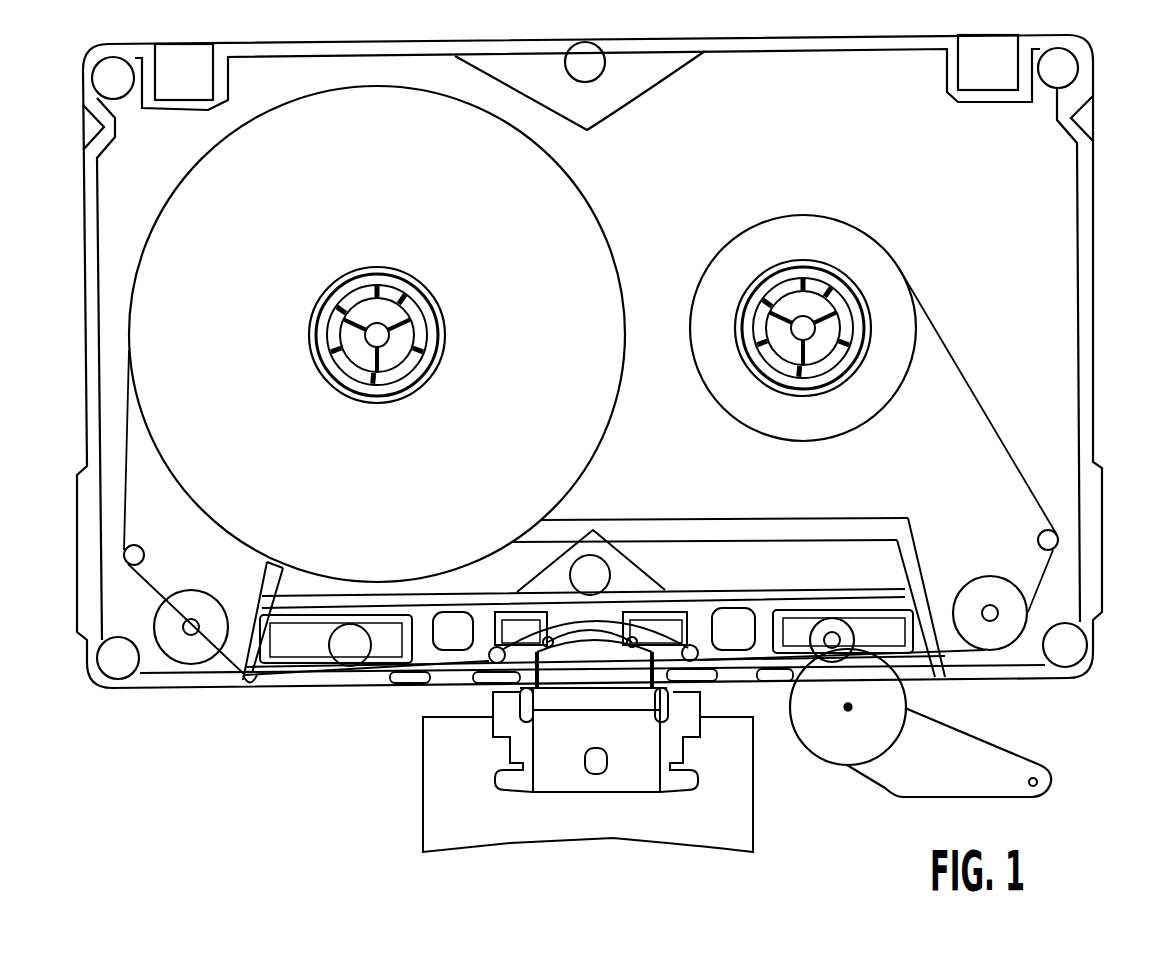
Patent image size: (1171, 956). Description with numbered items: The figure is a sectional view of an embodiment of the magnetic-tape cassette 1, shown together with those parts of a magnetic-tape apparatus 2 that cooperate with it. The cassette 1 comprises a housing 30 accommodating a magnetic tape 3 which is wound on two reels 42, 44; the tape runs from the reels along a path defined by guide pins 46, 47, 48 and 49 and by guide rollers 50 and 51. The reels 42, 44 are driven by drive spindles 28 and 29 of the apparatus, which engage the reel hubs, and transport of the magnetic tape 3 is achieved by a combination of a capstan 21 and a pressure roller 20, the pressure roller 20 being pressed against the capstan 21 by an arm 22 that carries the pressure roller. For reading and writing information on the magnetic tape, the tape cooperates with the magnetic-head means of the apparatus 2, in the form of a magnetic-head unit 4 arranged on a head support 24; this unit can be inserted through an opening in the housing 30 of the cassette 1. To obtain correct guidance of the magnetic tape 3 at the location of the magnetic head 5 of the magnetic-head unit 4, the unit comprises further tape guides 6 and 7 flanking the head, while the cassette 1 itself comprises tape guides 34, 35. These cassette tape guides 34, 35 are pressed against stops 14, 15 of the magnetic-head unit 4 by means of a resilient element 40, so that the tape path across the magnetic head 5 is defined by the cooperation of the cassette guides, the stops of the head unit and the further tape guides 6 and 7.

The magnetic-tape cassette 1 is at (1097, 215).
The magnetic-tape apparatus 2 is at (972, 724).
The magnetic tape 3 is at (963, 354).
The magnetic-head unit 4 is at (588, 719).
The magnetic head 5 is at (595, 678).
The tape guide 6 is at (520, 692).
The tape guide 7 is at (670, 687).
The stop 14 is at (549, 654).
The stop 15 is at (633, 654).
The pressure roller 20 is at (835, 745).
The capstan 21 is at (832, 637).
The arm 22 is at (949, 752).
The head support 24 is at (708, 828).
The drive spindle 28 is at (372, 313).
The drive spindle 29 is at (805, 305).
The housing 30 is at (715, 43).
The tape guide 34 is at (550, 638).
The tape guide 35 is at (632, 636).
The resilient element 40 is at (603, 626).
The reel 42 is at (587, 240).
The reel 44 is at (773, 242).
The guide pin 46 is at (487, 662).
The guide pin 47 is at (700, 660).
The guide pin 48 is at (144, 555).
The guide pin 49 is at (1038, 539).
The guide roller 50 is at (212, 613).
The guide roller 51 is at (975, 597).